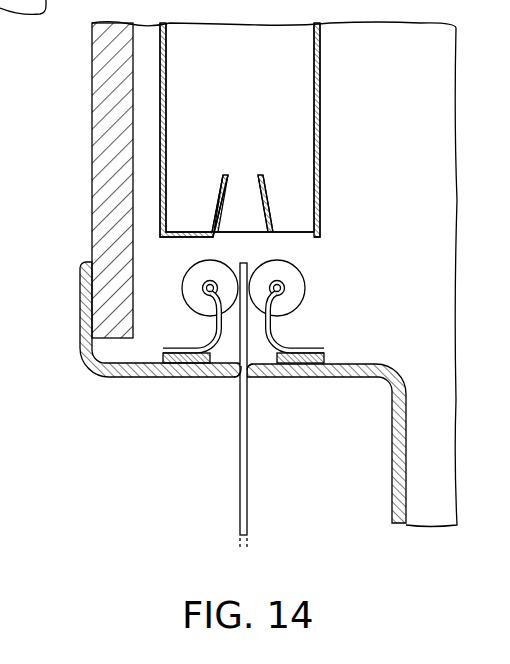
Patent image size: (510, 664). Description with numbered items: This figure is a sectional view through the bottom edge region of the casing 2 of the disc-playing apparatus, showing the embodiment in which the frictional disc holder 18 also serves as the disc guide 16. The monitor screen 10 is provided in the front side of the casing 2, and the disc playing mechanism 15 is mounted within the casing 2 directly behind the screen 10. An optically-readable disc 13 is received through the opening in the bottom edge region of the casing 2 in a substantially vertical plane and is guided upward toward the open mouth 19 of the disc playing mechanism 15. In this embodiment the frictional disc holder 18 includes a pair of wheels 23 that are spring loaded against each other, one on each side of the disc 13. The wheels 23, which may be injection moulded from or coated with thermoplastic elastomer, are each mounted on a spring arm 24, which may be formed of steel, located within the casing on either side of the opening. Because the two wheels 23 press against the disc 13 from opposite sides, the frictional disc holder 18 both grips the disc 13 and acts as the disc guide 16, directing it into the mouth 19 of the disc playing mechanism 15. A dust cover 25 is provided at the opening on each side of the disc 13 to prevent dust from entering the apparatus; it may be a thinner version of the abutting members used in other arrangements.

The casing 2 is at (392, 447).
The monitor screen 10 is at (92, 163).
The optically-readable disc 13 is at (240, 522).
The disc playing mechanism 15 is at (330, 158).
The disc guide 16 is at (316, 311).
The frictional disc holder 18 is at (319, 288).
The open mouth 19 is at (256, 189).
The wheel 23 is at (188, 288).
The spring arm 24 is at (200, 330).
The dust cover 25 is at (227, 379).